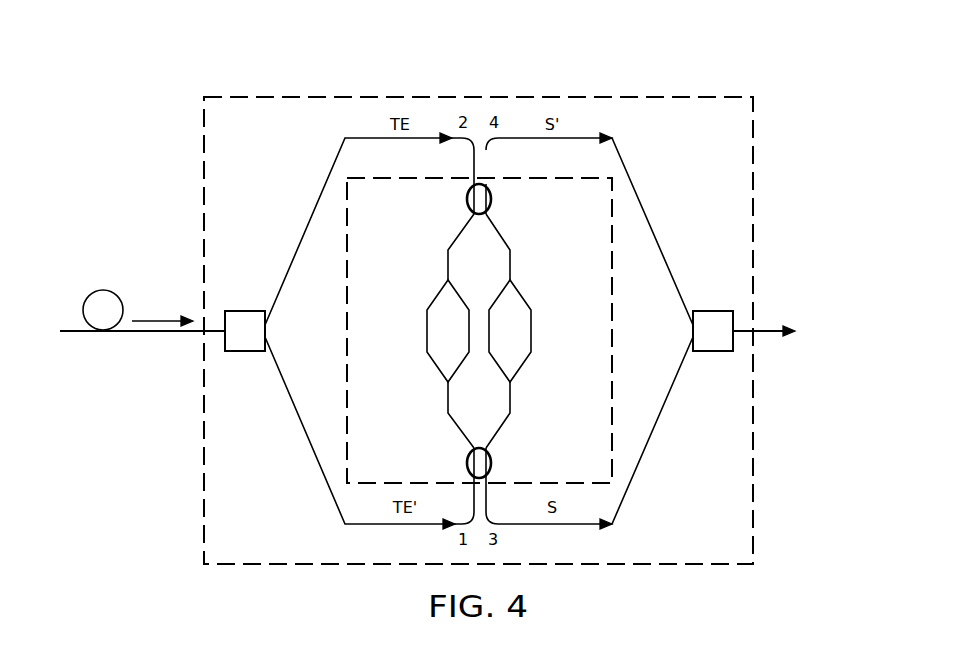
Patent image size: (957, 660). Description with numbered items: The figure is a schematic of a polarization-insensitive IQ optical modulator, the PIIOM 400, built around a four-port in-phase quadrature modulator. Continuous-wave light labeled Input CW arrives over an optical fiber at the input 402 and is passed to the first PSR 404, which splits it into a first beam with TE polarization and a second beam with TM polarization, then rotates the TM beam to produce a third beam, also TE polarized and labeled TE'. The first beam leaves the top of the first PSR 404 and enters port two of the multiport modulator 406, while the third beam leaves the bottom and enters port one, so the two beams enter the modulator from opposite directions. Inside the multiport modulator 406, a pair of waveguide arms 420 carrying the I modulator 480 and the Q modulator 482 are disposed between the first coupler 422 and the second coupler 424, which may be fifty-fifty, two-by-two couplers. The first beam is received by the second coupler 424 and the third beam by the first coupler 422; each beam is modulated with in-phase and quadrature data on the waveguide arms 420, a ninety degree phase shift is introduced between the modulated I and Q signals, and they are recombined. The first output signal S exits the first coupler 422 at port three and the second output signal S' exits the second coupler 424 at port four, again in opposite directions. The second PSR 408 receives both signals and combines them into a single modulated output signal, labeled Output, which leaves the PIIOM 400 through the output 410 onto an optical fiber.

The PIIOM 400 is at (333, 52).
The input 402 is at (199, 334).
The first PSR 404 is at (245, 352).
The multiport modulator 406 is at (377, 296).
The second PSR 408 is at (713, 352).
The output 410 is at (757, 338).
The waveguide arms 420 is at (460, 430).
The first coupler 422 is at (492, 463).
The second coupler 424 is at (492, 198).
The I modulator 480 is at (427, 332).
The Q modulator 482 is at (531, 332).